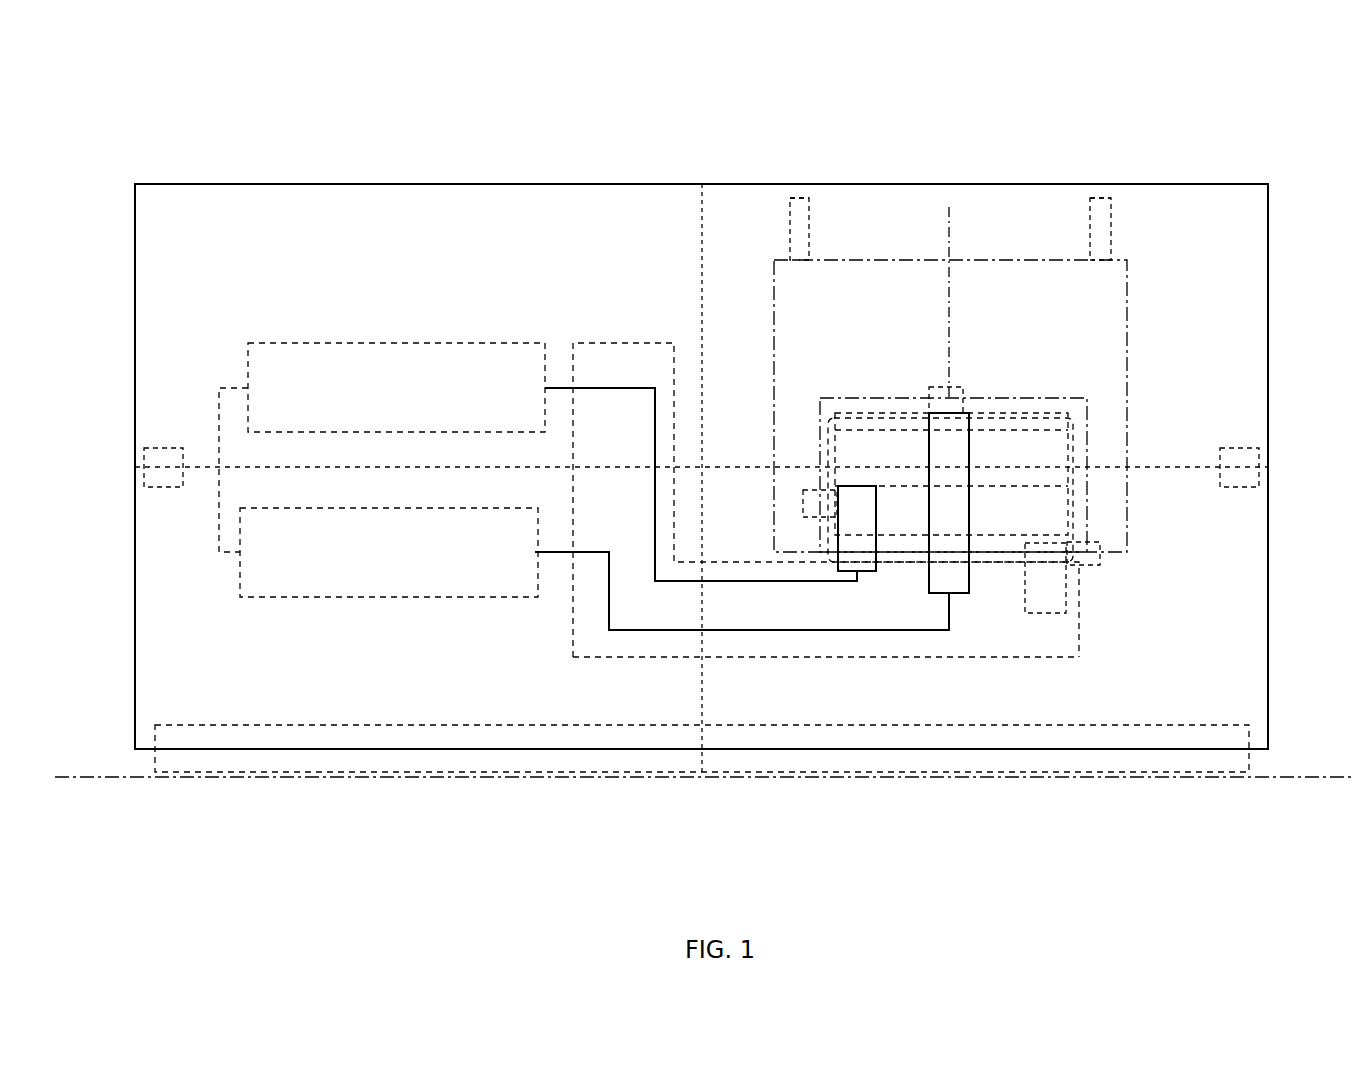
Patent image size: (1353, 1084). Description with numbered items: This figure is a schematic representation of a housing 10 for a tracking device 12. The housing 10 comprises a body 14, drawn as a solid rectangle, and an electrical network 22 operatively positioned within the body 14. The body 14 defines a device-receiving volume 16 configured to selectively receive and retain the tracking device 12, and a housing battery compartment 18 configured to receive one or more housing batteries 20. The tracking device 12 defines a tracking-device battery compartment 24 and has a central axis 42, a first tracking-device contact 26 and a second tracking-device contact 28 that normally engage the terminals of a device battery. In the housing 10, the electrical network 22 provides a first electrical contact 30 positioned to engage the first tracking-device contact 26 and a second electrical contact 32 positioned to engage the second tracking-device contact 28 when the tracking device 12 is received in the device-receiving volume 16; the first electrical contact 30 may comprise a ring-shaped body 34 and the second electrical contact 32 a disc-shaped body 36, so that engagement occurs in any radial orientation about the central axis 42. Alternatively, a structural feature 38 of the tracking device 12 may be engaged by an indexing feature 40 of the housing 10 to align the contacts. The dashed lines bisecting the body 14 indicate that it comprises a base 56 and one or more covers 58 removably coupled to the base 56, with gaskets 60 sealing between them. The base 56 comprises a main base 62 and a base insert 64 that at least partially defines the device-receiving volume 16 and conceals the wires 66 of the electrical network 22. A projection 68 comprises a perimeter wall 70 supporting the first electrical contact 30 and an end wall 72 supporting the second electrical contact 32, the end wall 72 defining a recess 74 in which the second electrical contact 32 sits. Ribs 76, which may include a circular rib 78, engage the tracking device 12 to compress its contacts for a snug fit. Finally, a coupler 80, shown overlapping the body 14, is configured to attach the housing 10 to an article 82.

The housing 10 is at (1218, 92).
The tracking device 12 is at (1128, 343).
The body 14 is at (1207, 168).
The device-receiving volume 16 is at (990, 210).
The housing battery compartment 18 is at (402, 208).
The housing batteries 20 is at (395, 343).
The electrical network 22 is at (780, 657).
The tracking-device battery compartment 24 is at (1088, 410).
The first tracking-device contact 26 is at (812, 490).
The second tracking-device contact 28 is at (955, 387).
The first electrical contact 30 is at (877, 505).
The second electrical contact 32 is at (970, 510).
The ring-shaped body 34 is at (985, 555).
The disc-shaped body 36 is at (1020, 430).
The structural feature 38 is at (1100, 555).
The indexing feature 40 is at (1045, 613).
The central axis 42 is at (945, 230).
The base 56 is at (1270, 618).
The cover 58 is at (130, 318).
The gasket 60 is at (156, 448).
The main base 62 is at (1268, 525).
The base insert 64 is at (625, 343).
The wires 66 is at (655, 535).
The projection 68 is at (1085, 455).
The perimeter wall 70 is at (1088, 500).
The end wall 72 is at (886, 418).
The recess 74 is at (940, 402).
The rib 76 is at (786, 225).
The circular rib 78 is at (808, 212).
The coupler 80 is at (1145, 777).
The article 82 is at (130, 777).